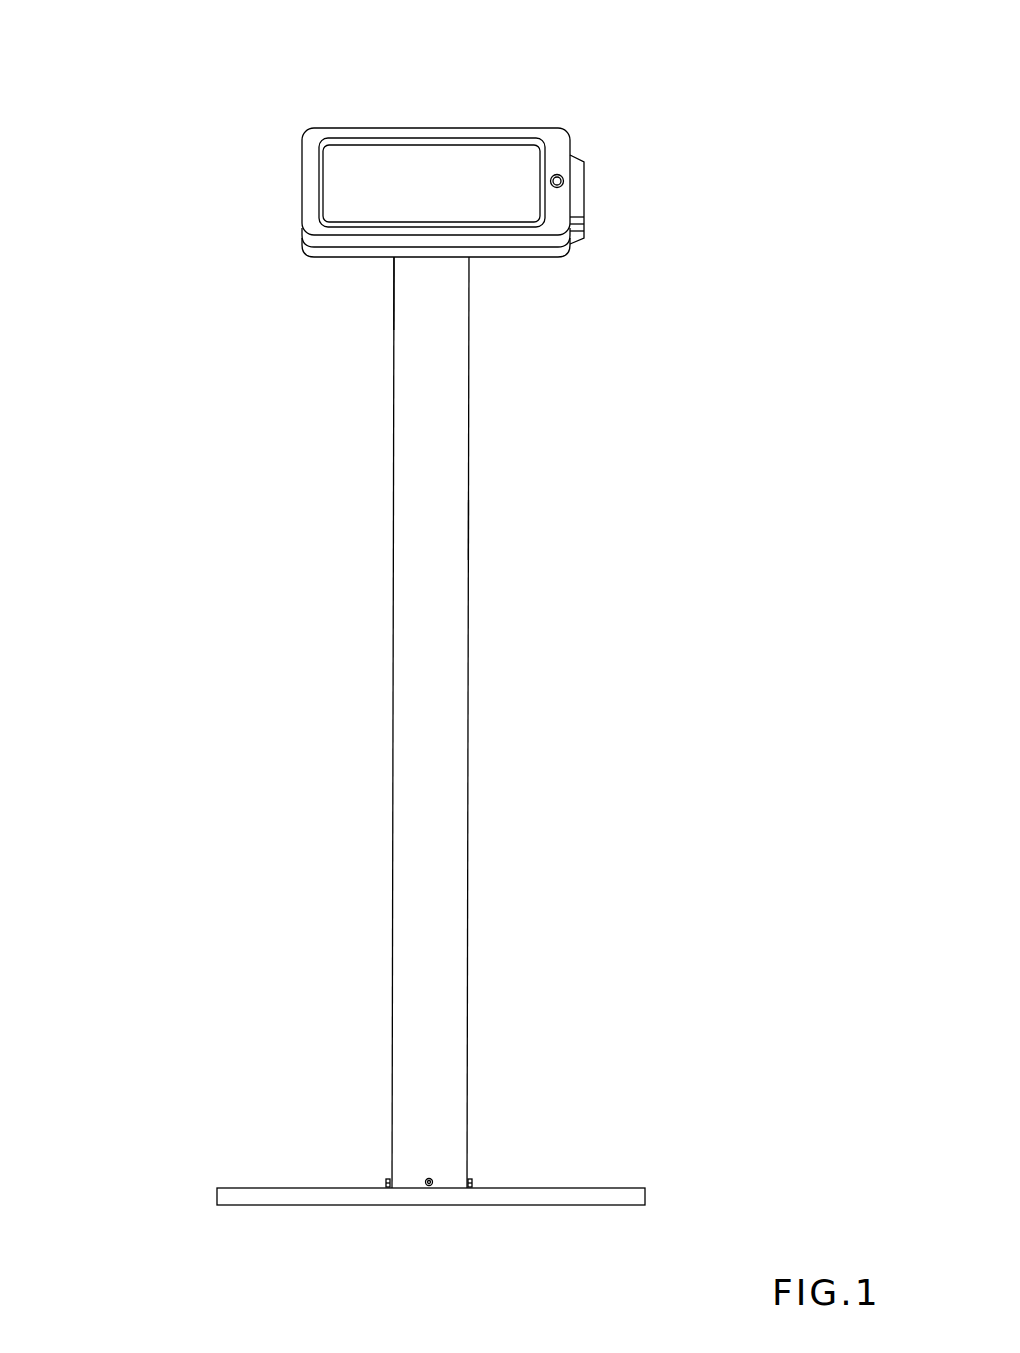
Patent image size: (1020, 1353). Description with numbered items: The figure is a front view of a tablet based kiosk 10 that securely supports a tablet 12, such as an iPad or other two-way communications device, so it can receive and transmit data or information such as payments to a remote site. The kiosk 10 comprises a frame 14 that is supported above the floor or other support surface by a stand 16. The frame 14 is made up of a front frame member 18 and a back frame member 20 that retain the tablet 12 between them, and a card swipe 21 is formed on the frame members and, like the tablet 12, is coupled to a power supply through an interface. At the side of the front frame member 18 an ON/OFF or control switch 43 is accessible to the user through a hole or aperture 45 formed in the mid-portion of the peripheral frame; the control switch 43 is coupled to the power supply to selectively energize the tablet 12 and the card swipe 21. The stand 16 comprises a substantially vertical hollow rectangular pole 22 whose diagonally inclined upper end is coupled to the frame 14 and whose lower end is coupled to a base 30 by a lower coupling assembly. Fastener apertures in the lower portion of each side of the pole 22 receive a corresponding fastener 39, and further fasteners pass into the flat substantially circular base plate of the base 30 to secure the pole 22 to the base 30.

The tablet based kiosk 10 is at (196, 673).
The tablet 12 is at (513, 159).
The frame 14 is at (264, 200).
The stand 16 is at (519, 683).
The front frame member 18 is at (296, 110).
The back frame member 20 is at (306, 339).
The card swipe 21 is at (627, 194).
The substantially vertical hollow rectangular pole 22 is at (469, 527).
The base 30 is at (625, 1129).
The fastener 39 is at (387, 1180).
The control switch 43 is at (570, 166).
The aperture 45 is at (573, 195).